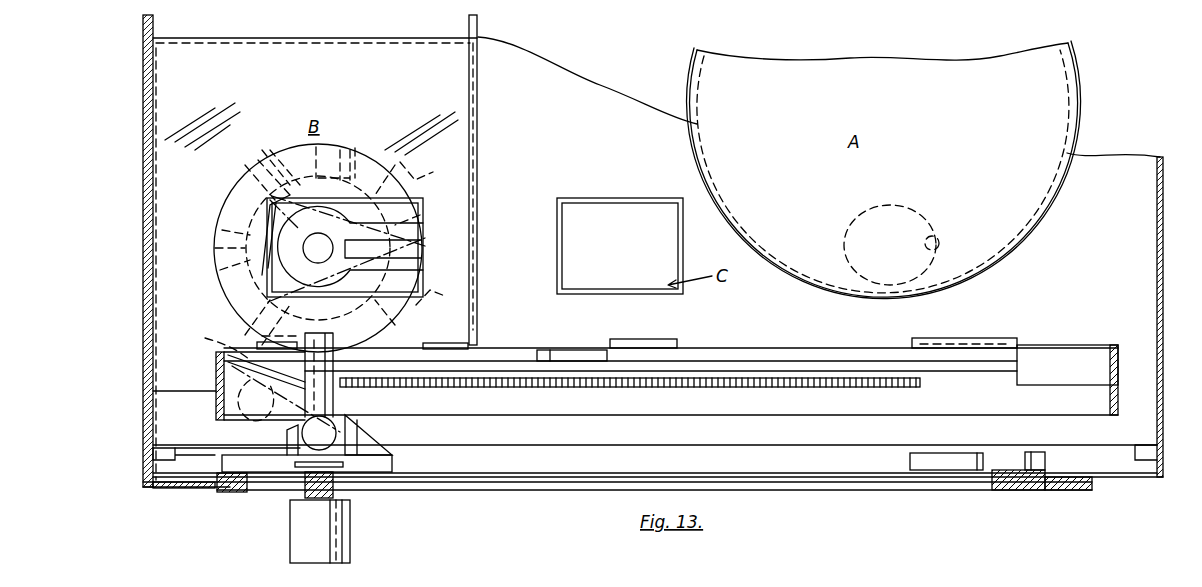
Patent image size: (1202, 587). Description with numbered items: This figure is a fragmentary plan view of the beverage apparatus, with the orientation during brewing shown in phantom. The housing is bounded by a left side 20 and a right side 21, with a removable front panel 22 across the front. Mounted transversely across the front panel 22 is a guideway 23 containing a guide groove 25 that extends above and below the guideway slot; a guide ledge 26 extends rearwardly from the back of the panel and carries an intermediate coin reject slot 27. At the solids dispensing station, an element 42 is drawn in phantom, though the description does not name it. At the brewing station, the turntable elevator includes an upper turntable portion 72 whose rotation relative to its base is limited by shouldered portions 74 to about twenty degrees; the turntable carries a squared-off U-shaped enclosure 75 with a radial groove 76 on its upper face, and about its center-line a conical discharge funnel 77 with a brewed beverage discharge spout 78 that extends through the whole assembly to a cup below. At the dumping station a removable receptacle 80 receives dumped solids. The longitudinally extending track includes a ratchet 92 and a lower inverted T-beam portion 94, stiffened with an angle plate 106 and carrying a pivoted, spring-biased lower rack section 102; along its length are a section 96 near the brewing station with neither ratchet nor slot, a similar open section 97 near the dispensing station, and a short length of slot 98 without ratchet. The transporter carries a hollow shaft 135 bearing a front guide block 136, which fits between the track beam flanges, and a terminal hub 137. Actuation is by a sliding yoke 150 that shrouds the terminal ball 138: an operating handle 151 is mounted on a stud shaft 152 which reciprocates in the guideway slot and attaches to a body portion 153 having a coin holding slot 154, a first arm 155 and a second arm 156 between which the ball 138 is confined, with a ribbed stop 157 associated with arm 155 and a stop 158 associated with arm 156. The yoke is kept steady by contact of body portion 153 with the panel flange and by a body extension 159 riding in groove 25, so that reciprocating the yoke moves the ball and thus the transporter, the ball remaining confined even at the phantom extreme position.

The left side 20 is at (143, 208).
The right side 21 is at (1163, 365).
The front panel 22 is at (148, 487).
The guideway 23 is at (230, 492).
The guide groove 25 is at (492, 482).
The guide ledge 26 is at (940, 470).
The coin reject slot 27 is at (1015, 490).
The opening 42 is at (935, 234).
The upper turntable portion 72 is at (220, 278).
The shouldered portions 74 is at (428, 236).
The U-shaped enclosure 75 is at (288, 178).
The groove 76 is at (408, 262).
The conical discharge funnel 77 is at (336, 200).
The brewed beverage discharge spout 78 is at (316, 248).
The removable receptacle 80 is at (646, 185).
The ratchet 92 is at (757, 387).
The lower inverted T-beam portion 94 is at (745, 361).
The section 96 is at (222, 404).
The open section 97 is at (1102, 370).
The short length of slot 98 is at (970, 380).
The lower rack section 102 is at (596, 345).
The angle plate 106 is at (516, 348).
The hollow shaft 135 is at (333, 395).
The front guide block 136 is at (393, 398).
The terminal hub 137 is at (255, 345).
The terminal ball 138 is at (398, 442).
The sliding yoke 150 is at (283, 470).
The operating handle 151 is at (350, 548).
The stud shaft 152 is at (335, 490).
The body portion 153 is at (392, 458).
The coin holding slot 154 is at (305, 468).
The first arm 155 is at (290, 436).
The second arm 156 is at (355, 425).
The ribbed stop 157 is at (222, 464).
The stop 158 is at (400, 465).
The body extension 159 is at (345, 488).